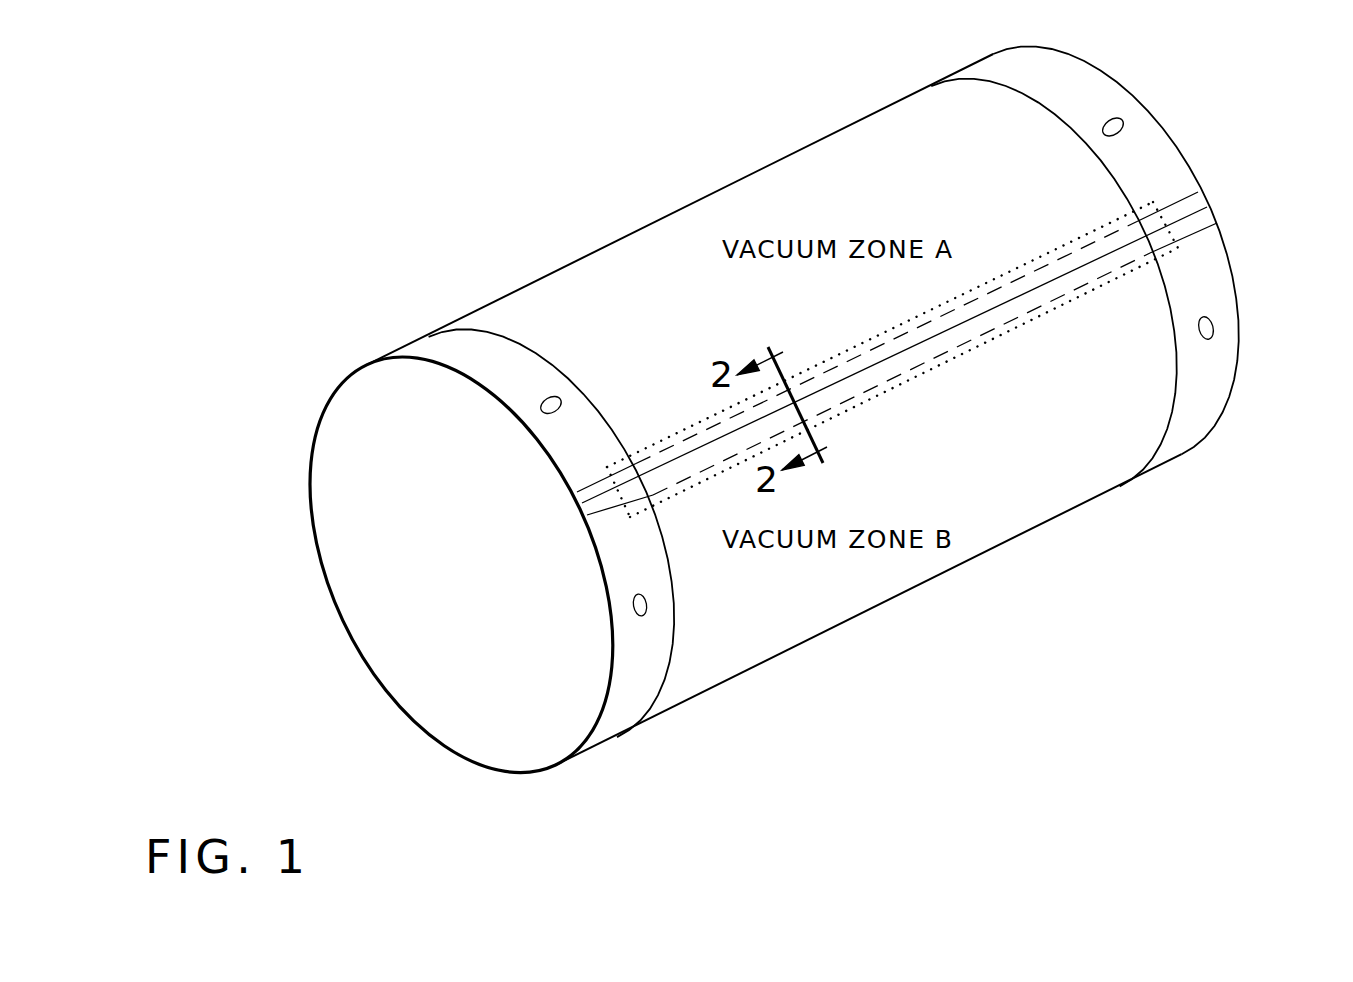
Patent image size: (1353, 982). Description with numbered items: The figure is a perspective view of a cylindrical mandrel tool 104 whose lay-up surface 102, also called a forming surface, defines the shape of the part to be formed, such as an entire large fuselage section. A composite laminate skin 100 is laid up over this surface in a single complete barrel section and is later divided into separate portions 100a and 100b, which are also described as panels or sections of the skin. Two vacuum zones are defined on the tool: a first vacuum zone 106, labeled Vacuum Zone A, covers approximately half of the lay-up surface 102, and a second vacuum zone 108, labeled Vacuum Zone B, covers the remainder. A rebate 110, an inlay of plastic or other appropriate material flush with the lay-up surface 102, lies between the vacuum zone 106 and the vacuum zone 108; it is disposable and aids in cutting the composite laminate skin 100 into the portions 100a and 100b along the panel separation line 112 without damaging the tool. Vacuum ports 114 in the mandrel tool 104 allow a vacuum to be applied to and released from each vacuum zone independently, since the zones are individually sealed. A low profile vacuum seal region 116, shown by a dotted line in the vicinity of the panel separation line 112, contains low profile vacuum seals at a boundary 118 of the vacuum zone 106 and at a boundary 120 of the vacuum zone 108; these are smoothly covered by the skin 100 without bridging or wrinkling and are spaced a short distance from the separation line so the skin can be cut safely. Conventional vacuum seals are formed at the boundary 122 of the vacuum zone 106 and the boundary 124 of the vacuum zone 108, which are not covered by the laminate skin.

The composite laminate skin 100 is at (760, 157).
The first portion of composite laminate skin 100a is at (1050, 105).
The second portion of composite laminate skin 100b is at (1172, 297).
The lay-up surface 102 is at (461, 563).
The mandrel tool 104 is at (390, 752).
The first vacuum zone 106 is at (1170, 122).
The second vacuum zone 108 is at (1228, 247).
The rebate 110 is at (602, 502).
The panel separation line 112 is at (1028, 292).
The vacuum ports 114 is at (549, 413).
The low profile vacuum seal region 116 is at (655, 445).
The boundary of first vacuum zone 118 is at (977, 287).
The boundary of second vacuum zone 120 is at (975, 343).
The boundary of first vacuum zone 122 is at (465, 380).
The boundary of second vacuum zone 124 is at (602, 720).